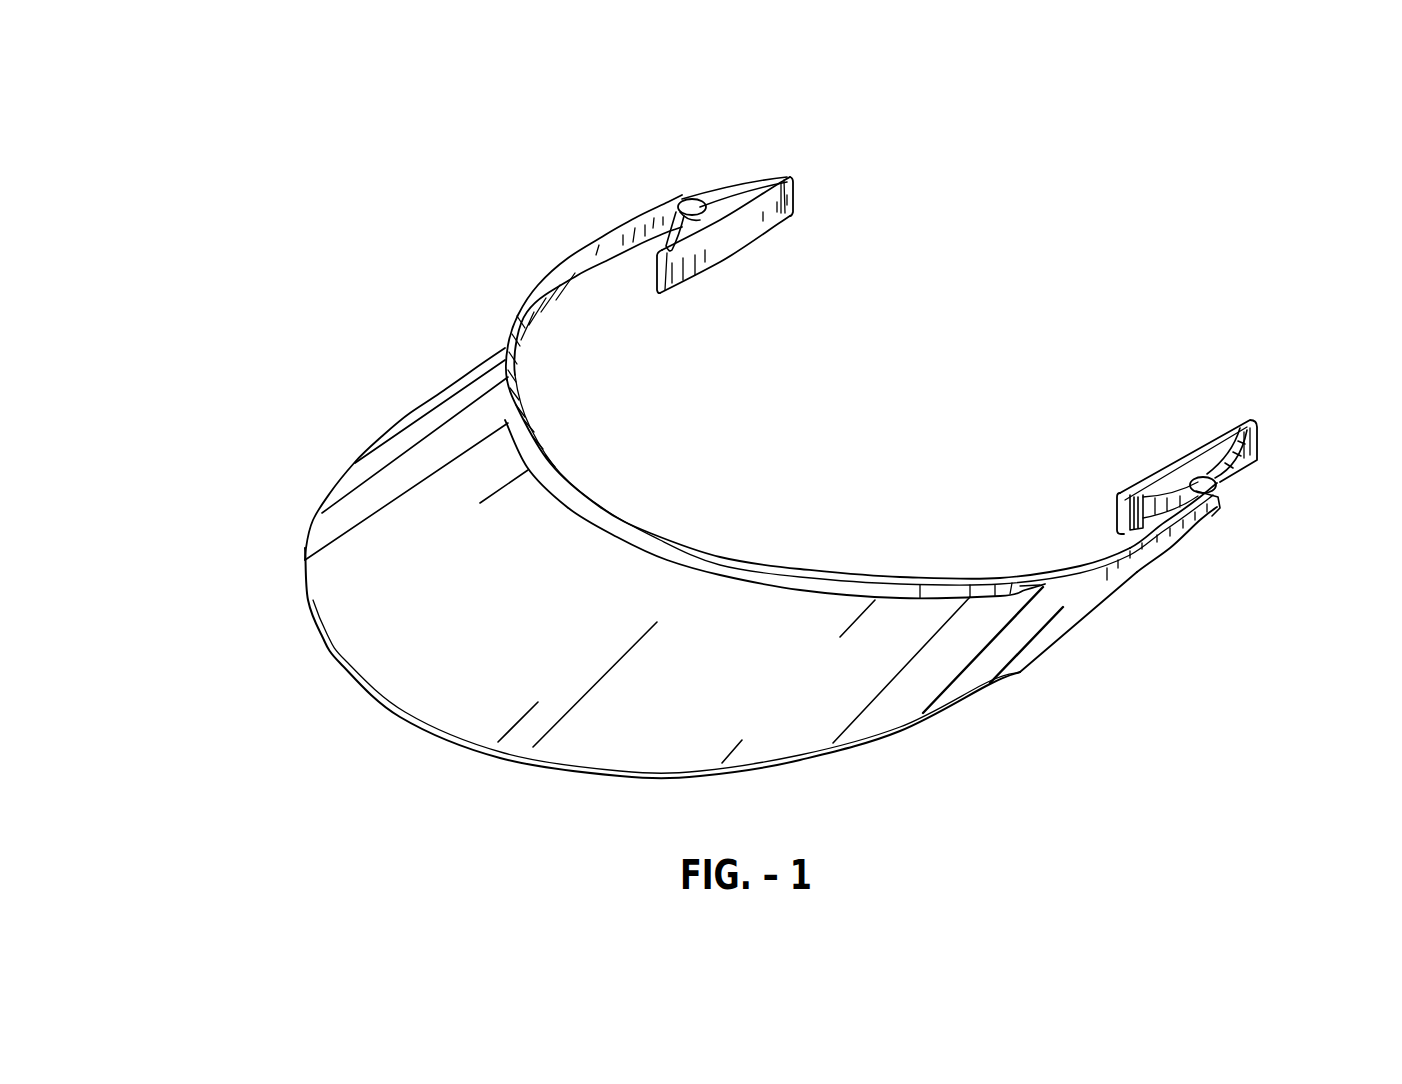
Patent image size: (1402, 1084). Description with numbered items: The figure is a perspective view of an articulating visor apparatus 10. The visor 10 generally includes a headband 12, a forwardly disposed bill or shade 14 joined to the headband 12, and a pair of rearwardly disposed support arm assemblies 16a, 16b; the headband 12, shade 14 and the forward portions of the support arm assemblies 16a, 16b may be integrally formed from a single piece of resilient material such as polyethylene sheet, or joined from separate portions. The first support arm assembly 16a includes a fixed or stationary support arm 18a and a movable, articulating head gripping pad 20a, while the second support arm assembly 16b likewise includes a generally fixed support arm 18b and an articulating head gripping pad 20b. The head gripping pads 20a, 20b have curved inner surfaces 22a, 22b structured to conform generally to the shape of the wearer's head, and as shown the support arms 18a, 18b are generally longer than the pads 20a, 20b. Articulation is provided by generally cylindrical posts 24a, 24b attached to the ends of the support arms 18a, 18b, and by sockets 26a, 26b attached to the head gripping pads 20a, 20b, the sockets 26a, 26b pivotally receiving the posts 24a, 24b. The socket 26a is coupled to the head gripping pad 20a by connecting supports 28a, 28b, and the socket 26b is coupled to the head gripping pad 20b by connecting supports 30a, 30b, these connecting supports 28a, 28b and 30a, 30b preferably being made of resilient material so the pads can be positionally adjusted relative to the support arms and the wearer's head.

The articulating visor apparatus 10 is at (232, 167).
The headband 12 is at (507, 375).
The bill or shade 14 is at (333, 590).
The first support arm assembly 16a is at (1285, 513).
The second support arm assembly 16b is at (601, 130).
The support arm 18a is at (1180, 537).
The support arm 18b is at (607, 250).
The head gripping pad 20a is at (1257, 430).
The head gripping pad 20b is at (790, 197).
The curved inner surface 22a is at (1168, 445).
The curved inner surface 22b is at (755, 256).
The cylindrical post 24a is at (1200, 480).
The cylindrical post 24b is at (695, 204).
The socket 26a is at (1215, 480).
The socket 26b is at (702, 199).
The connecting support 28a is at (1147, 503).
The connecting support 28b is at (1228, 480).
The connecting support 30a is at (667, 228).
The connecting support 30b is at (753, 181).